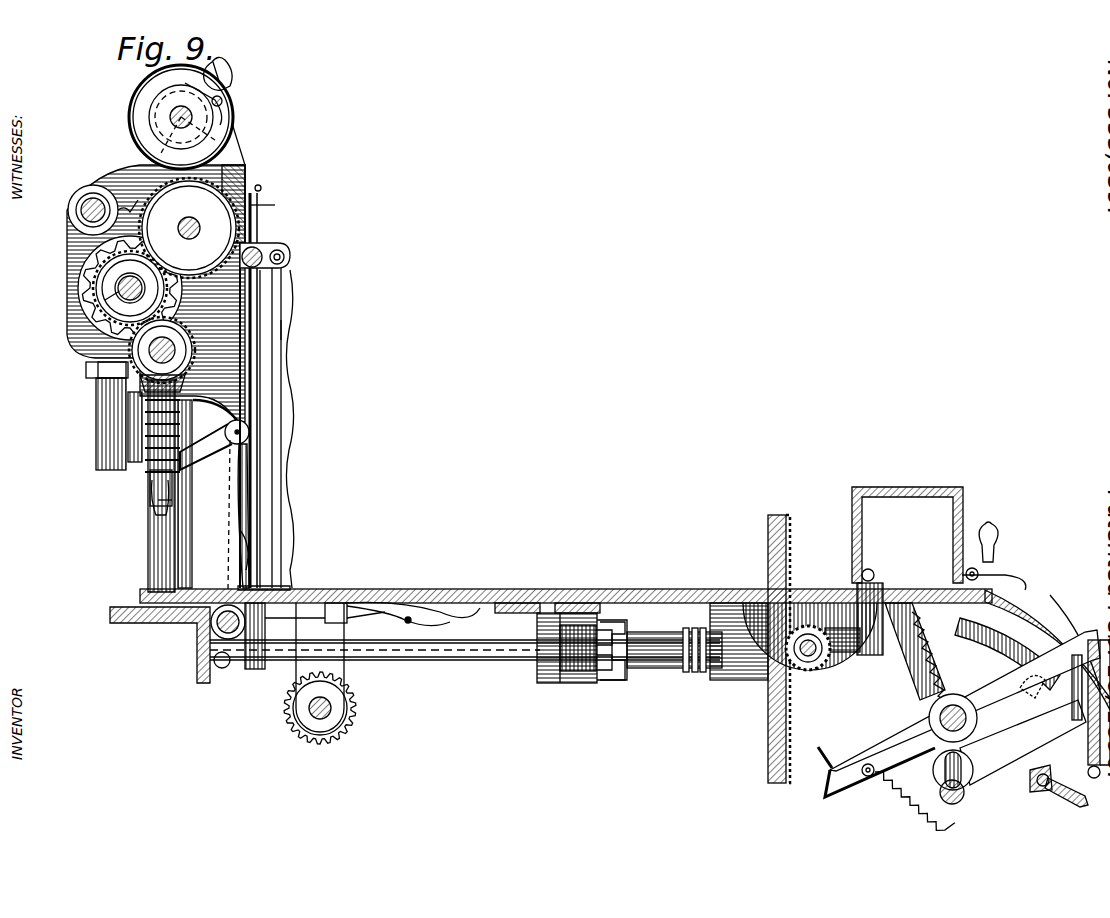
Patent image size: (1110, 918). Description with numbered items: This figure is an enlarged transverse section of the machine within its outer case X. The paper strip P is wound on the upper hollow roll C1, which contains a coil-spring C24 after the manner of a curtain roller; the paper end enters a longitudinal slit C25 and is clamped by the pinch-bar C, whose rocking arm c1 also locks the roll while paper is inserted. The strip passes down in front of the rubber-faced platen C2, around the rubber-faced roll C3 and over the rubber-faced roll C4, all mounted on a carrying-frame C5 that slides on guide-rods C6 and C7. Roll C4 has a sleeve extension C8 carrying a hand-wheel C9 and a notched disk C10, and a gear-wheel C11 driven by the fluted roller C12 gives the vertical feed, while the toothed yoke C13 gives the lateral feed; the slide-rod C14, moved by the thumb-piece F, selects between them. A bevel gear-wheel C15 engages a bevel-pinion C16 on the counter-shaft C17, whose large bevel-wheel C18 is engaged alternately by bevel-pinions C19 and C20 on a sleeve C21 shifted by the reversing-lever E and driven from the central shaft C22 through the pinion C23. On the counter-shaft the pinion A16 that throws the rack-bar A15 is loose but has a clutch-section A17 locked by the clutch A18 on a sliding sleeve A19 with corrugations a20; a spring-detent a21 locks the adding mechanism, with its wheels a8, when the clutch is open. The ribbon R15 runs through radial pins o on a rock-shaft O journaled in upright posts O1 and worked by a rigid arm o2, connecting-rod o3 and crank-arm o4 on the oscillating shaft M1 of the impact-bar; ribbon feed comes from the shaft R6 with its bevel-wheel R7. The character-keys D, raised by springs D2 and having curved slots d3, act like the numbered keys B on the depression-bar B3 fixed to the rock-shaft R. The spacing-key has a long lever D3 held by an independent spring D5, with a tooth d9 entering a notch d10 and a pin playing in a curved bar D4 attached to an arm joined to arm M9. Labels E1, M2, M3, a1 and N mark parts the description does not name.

The paper strip P is at (242, 158).
The pinch-bar C is at (226, 97).
The upper hollow roll C1 is at (166, 117).
The rocking arm c1 is at (222, 66).
The coil-spring C24 is at (170, 129).
The longitudinal slit C25 is at (224, 102).
The platen C2 is at (250, 170).
The rubber-faced roll C3 is at (165, 200).
The rubber-faced roll C4 is at (95, 290).
The carrying-frame C5 is at (80, 210).
The guide-rod C6 is at (82, 188).
The guide-rod C7 is at (120, 295).
The sleeve extension C8 is at (130, 288).
The hand-wheel C9 is at (68, 272).
The notched disk C10 is at (108, 318).
The gear-wheel C11 is at (190, 382).
The fluted roller C12 is at (178, 486).
The yoke C13 is at (96, 392).
The slide-rod C14 is at (186, 472).
The bevel gear-wheel C15 is at (182, 438).
The bevel-pinion C16 is at (250, 432).
The counter-shaft C17 is at (250, 478).
The large bevel-wheel C18 is at (405, 606).
The bevel-pinion C19 is at (438, 605).
The bevel-pinion C20 is at (168, 505).
The sleeve C21 is at (830, 578).
The central shaft C22 is at (752, 690).
The pinion C23 is at (872, 570).
The wheels a8 is at (112, 366).
The rock-shaft O is at (288, 268).
The upright posts O1 is at (262, 372).
The radial pins o is at (269, 183).
The rigid arm o2 is at (266, 250).
The connecting-rod o3 is at (284, 318).
The crank-arm o4 is at (292, 628).
The type-writer ribbon R15 is at (262, 206).
The bed plate E1 is at (566, 585).
The oscillating shaft M1 is at (232, 640).
The bearing cap M2 is at (222, 668).
The shaft M3 is at (513, 662).
The arm M9 is at (915, 651).
The horizontal shaft R6 is at (333, 710).
The bevel-wheel R7 is at (346, 732).
The rack-bar A15 is at (556, 603).
The pinion A16 is at (548, 683).
The clutch-section A17 is at (595, 628).
The clutch A18 is at (622, 682).
The sliding sleeve A19 is at (645, 645).
The corrugations a20 is at (695, 675).
The spring-detent a21 is at (575, 683).
The thumb-piece F is at (1000, 540).
The reversing-lever E is at (980, 570).
The character-keys D is at (965, 700).
The springs D2 is at (1030, 622).
The long lever D3 is at (830, 793).
The curved bar D4 is at (1045, 642).
The independent spring D5 is at (930, 795).
The curved slots d3 is at (967, 716).
The right-angular tooth d9 is at (862, 766).
The notch d10 is at (813, 748).
The spring a1 is at (950, 705).
The numbered keys B is at (1102, 702).
The depression-bar B3 is at (1023, 742).
The rock-shaft R is at (962, 788).
The stop arm N is at (1062, 792).
The outer case X is at (1086, 711).